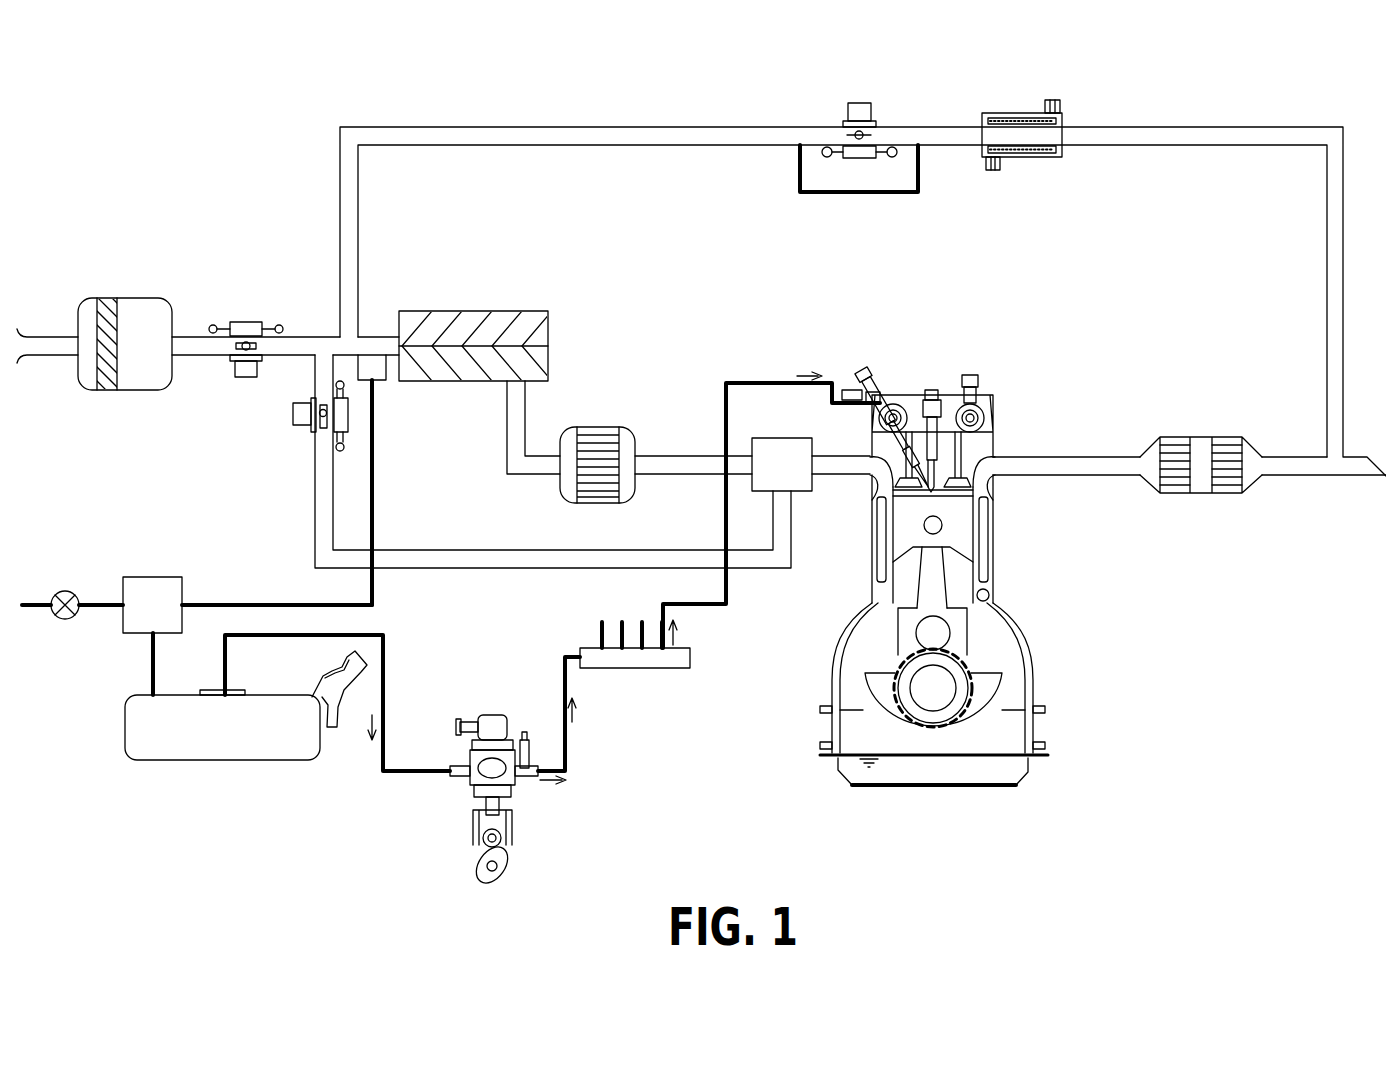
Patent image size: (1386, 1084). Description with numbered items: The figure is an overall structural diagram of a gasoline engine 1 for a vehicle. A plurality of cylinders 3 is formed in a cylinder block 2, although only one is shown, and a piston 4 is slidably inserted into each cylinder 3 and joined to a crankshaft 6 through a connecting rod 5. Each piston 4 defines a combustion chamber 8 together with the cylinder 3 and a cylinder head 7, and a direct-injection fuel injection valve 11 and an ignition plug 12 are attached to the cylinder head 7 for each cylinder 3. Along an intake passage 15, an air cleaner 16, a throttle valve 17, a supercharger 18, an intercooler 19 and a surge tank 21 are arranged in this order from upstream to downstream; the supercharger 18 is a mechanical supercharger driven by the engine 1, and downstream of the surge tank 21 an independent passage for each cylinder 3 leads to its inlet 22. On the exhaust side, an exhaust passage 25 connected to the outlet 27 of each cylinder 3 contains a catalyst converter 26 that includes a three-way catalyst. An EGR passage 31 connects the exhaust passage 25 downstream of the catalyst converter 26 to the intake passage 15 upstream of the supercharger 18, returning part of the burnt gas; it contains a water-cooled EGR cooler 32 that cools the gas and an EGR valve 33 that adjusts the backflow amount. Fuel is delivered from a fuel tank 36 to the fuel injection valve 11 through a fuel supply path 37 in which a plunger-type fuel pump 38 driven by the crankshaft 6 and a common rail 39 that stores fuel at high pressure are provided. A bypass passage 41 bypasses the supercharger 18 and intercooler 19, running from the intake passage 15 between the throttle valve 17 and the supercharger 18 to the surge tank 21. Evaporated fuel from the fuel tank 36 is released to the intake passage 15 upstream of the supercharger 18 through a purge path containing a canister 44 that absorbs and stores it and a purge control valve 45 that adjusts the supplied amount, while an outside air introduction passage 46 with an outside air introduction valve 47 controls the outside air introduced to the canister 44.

The gasoline engine 1 is at (1040, 680).
The cylinder block 2 is at (995, 588).
The cylinder 3 is at (898, 604).
The piston 4 is at (898, 556).
The connecting rod 5 is at (905, 630).
The crankshaft 6 is at (933, 700).
The cylinder head 7 is at (1000, 492).
The combustion chamber 8 is at (955, 497).
The fuel injection valve 11 is at (928, 390).
The ignition plug 12 is at (868, 381).
The intake passage 15 is at (372, 337).
The air cleaner 16 is at (135, 393).
The throttle valve 17 is at (247, 322).
The supercharger 18 is at (473, 311).
The intercooler 19 is at (633, 438).
The surge tank 21 is at (785, 438).
The inlet 22 is at (878, 470).
The exhaust passage 25 is at (1068, 457).
The catalyst converter 26 is at (1200, 437).
The outlet 27 is at (1000, 470).
The EGR passage 31 is at (1196, 127).
The EGR cooler 32 is at (1020, 113).
The EGR valve 33 is at (858, 103).
The fuel tank 36 is at (222, 762).
The fuel supply path 37 is at (563, 687).
The fuel pump 38 is at (470, 779).
The common rail 39 is at (614, 669).
The bypass passage 41 is at (483, 570).
The canister 44 is at (155, 577).
The purge control valve 45 is at (386, 380).
The outside air introduction passage 46 is at (103, 598).
The outside air introduction valve 47 is at (65, 590).